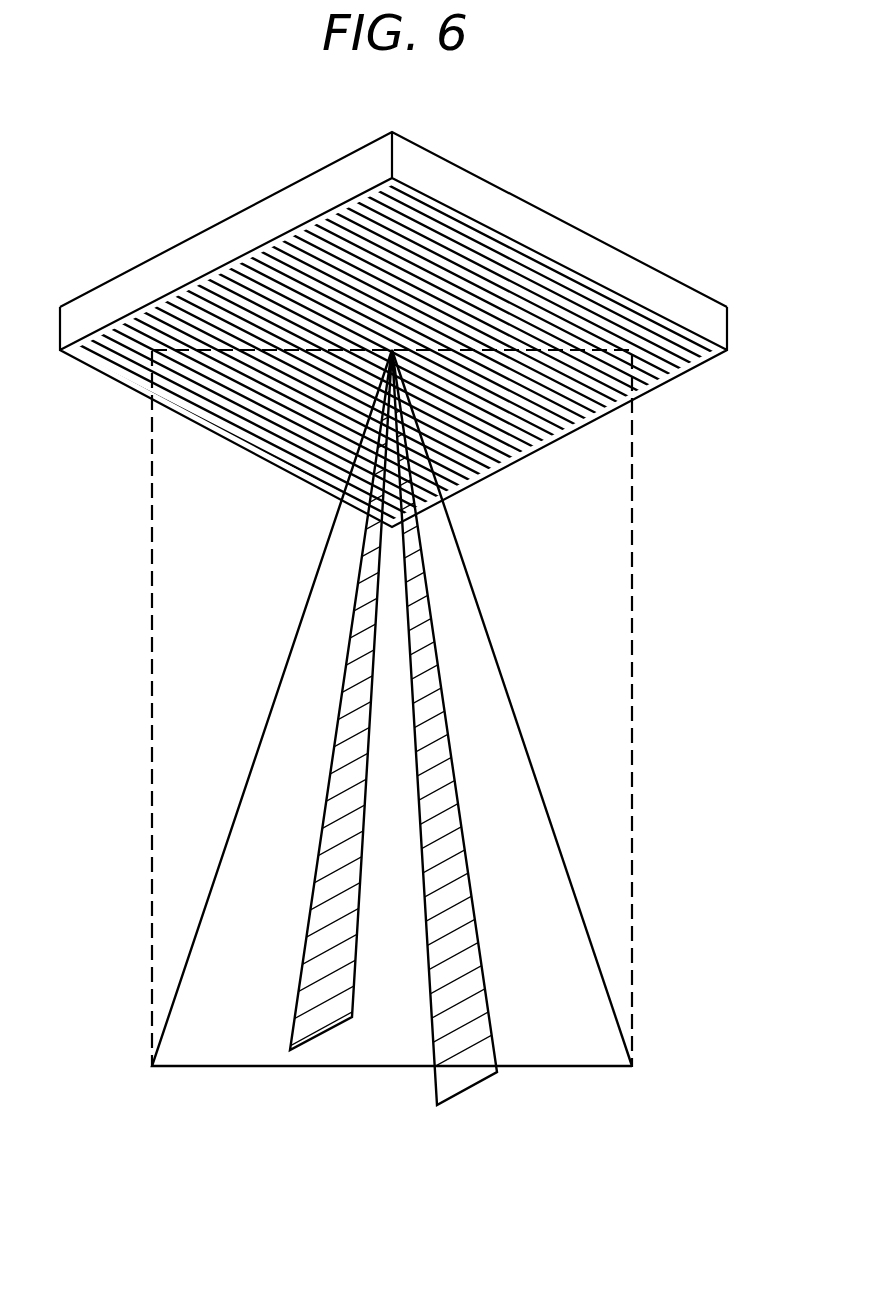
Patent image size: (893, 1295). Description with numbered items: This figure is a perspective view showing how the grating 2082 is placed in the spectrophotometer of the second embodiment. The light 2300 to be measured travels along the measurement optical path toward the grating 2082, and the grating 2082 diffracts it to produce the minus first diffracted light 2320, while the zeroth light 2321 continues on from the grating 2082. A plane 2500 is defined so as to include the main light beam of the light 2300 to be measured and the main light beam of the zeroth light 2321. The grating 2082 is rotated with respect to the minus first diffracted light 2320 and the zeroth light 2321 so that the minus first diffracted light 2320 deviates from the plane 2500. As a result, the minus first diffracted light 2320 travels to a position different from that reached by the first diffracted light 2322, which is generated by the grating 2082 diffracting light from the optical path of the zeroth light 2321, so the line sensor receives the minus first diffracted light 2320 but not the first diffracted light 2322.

The grating 2082 is at (552, 218).
The light to be measured 2300 is at (392, 708).
The zeroth light 2321 is at (505, 680).
The plane 2500 is at (635, 697).
The minus first diffracted light 2320 is at (302, 970).
The first diffracted light 2322 is at (487, 977).